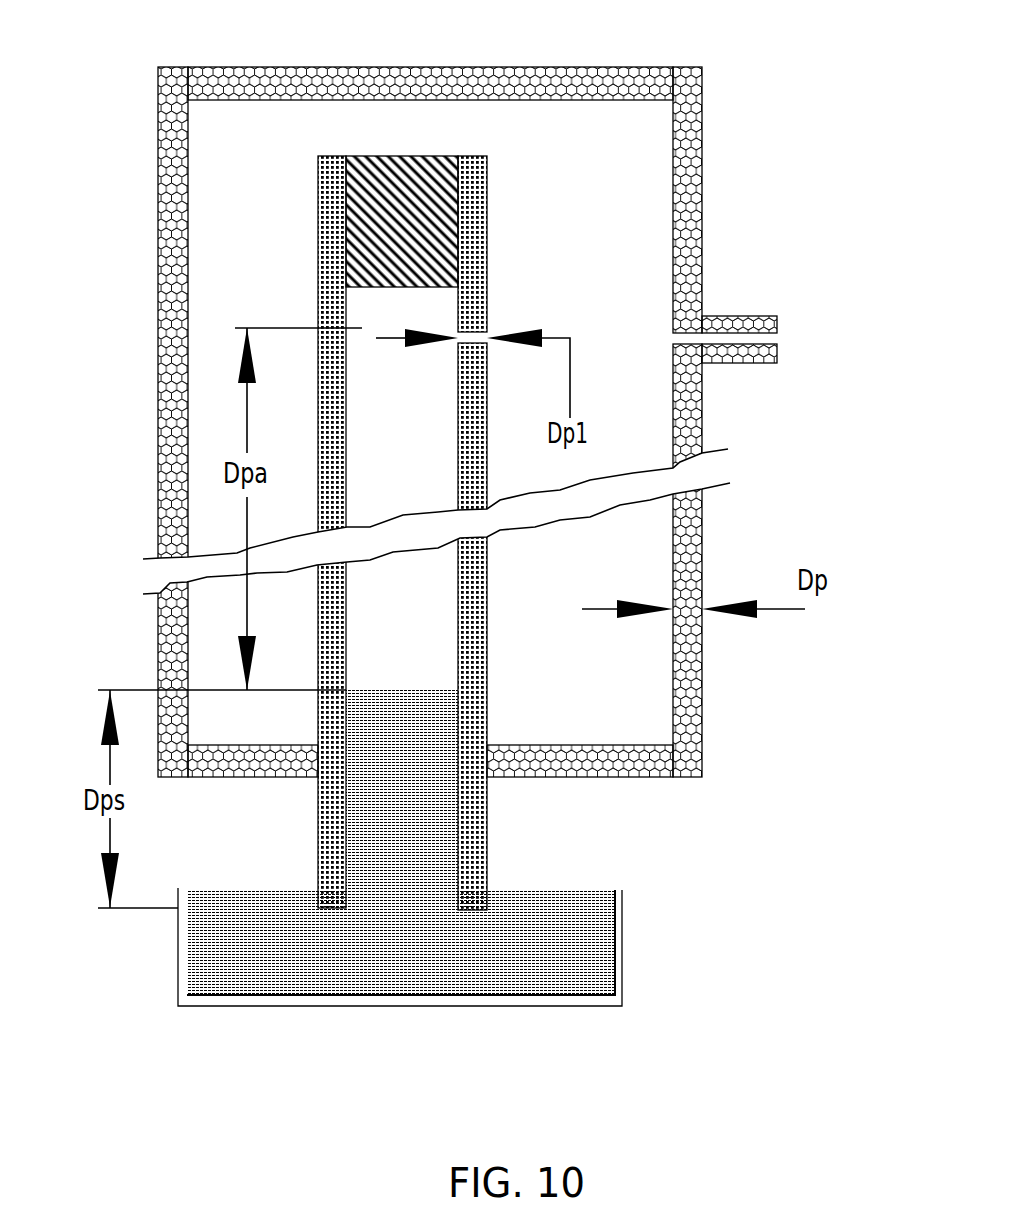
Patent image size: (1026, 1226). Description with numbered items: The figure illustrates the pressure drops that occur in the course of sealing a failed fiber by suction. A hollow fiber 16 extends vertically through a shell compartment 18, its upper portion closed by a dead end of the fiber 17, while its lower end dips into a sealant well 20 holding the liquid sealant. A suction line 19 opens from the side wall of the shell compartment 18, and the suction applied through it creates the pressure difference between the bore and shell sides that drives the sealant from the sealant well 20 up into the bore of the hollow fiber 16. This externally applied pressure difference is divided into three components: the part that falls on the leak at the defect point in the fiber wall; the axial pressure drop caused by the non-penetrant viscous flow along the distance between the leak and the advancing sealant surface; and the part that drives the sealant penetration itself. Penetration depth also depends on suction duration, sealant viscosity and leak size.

The hollow fiber 16 is at (332, 223).
The dead end of the fiber 17 is at (350, 208).
The shell compartment 18 is at (634, 167).
The suction line 19 is at (778, 340).
The sealant well 20 is at (528, 967).